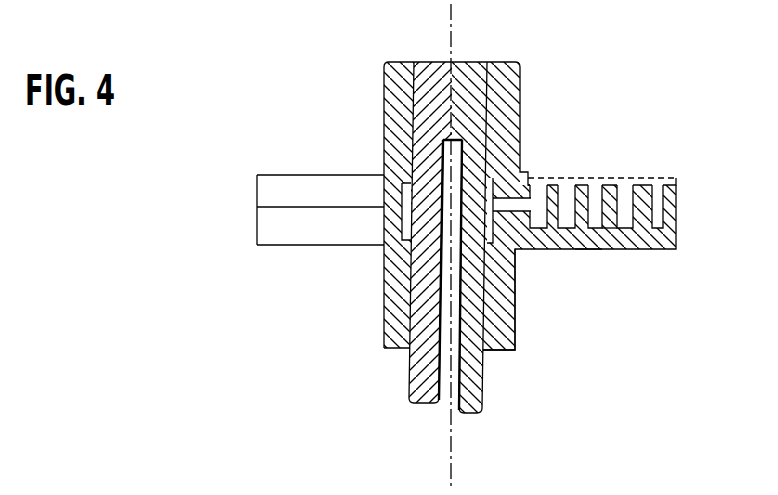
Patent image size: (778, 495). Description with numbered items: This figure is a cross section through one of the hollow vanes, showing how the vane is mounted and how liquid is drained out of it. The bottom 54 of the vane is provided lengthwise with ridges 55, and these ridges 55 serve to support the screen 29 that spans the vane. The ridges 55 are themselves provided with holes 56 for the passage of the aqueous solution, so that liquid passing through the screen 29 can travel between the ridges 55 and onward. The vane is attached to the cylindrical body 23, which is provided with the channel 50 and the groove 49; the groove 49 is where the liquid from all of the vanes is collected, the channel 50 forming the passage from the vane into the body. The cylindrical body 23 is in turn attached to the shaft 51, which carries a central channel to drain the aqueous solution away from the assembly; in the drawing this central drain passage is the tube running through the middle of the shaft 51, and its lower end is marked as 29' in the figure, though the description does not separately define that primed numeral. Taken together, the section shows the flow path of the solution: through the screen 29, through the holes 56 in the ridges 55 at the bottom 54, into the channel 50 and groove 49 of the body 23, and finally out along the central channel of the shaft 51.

The cylindrical body 23 is at (520, 132).
The screen 29 is at (587, 184).
The tube end 29' is at (397, 286).
The groove 49 is at (517, 322).
The channel 50 is at (514, 248).
The shaft 51 is at (473, 156).
The bottom of the vane 54 is at (612, 242).
The ridges 55 is at (617, 180).
The holes 56 is at (590, 238).